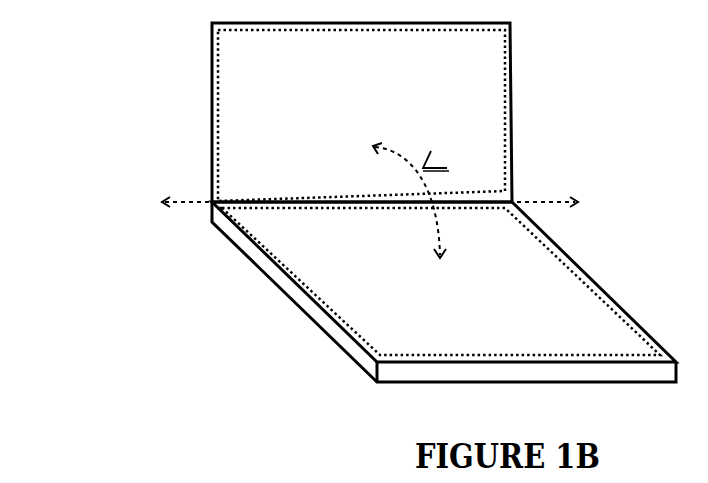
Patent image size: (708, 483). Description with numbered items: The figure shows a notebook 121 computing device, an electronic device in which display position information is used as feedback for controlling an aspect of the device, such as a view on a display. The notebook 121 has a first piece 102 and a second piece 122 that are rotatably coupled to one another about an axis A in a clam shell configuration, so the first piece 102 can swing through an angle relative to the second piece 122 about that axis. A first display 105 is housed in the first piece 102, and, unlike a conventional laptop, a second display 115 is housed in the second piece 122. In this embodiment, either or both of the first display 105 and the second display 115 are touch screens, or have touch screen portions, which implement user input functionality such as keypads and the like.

The notebook 121 is at (112, 125).
The first piece 102 is at (211, 82).
The first display 105 is at (361, 115).
The second piece 122 is at (262, 255).
The second display 115 is at (441, 281).